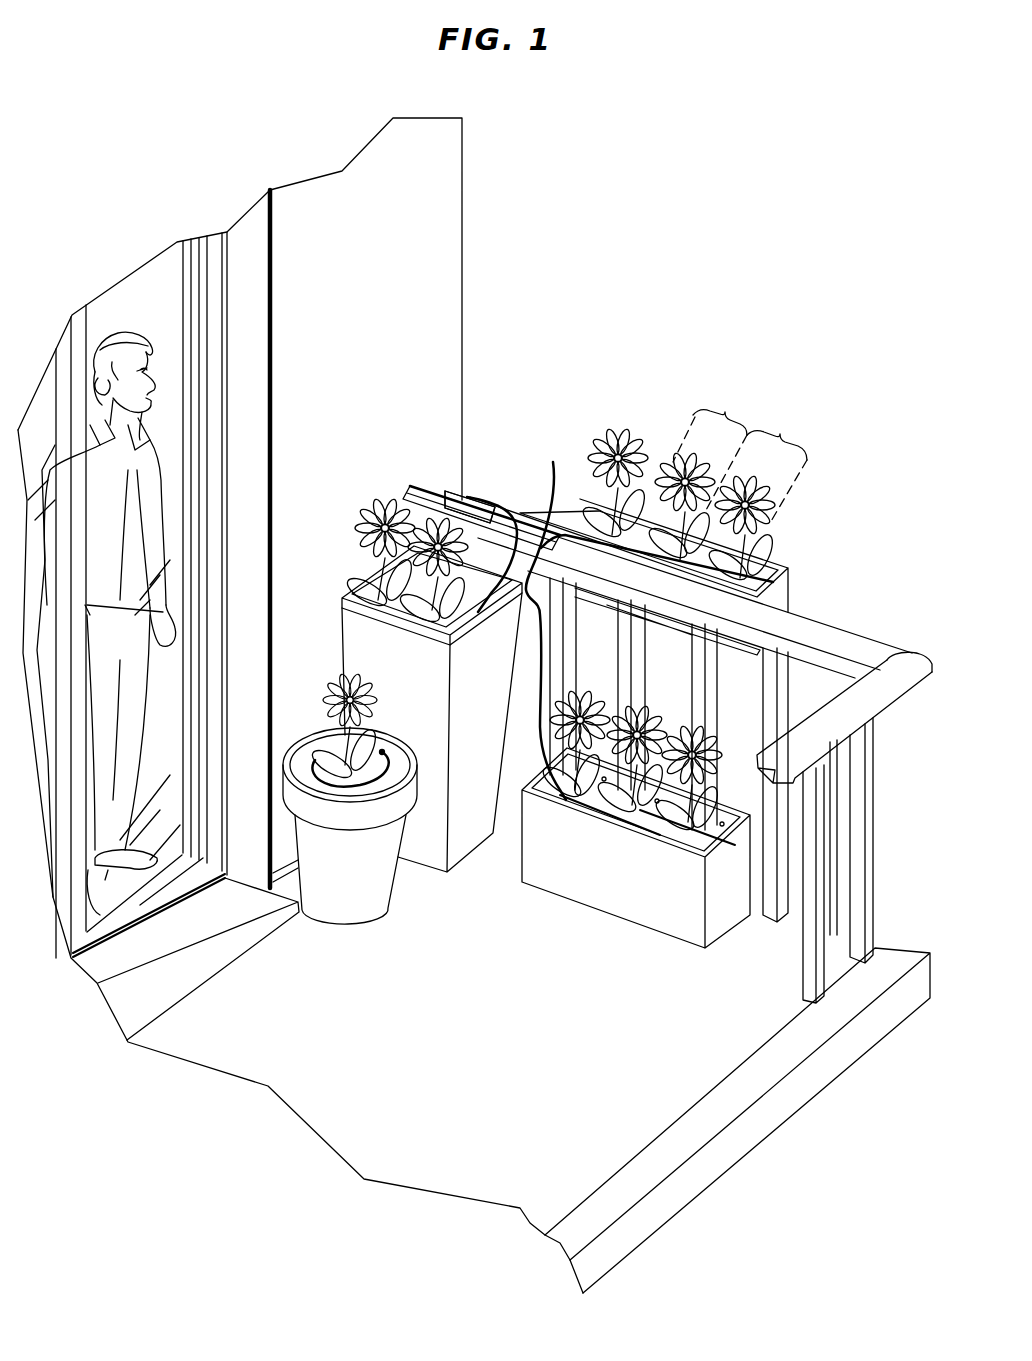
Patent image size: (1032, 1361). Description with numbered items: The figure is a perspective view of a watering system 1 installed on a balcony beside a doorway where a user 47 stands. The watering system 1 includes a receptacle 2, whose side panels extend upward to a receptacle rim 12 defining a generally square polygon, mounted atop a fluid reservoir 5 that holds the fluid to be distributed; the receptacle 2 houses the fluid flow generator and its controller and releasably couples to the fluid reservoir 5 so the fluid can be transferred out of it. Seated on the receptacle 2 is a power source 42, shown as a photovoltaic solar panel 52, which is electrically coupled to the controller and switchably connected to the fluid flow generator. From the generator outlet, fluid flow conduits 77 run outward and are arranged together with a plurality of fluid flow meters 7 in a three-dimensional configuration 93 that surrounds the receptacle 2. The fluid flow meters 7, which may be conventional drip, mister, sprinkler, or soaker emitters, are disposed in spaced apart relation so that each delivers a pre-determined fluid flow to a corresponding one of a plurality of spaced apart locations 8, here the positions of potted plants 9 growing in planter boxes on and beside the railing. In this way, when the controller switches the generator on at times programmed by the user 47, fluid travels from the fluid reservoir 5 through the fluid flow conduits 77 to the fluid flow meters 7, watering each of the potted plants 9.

The watering system 1 is at (598, 302).
The receptacle 2 is at (360, 569).
The fluid reservoir 5 is at (470, 748).
The fluid flow meters 7 is at (605, 780).
The spaced apart locations 8 is at (740, 454).
The potted plants 9 is at (789, 540).
The receptacle rim 12 is at (473, 618).
The power source 42 is at (470, 498).
The user 47 is at (105, 345).
The photovoltaic solar panel 52 is at (487, 452).
The fluid flow conduits 77 is at (462, 890).
The three-dimensional configuration 93 is at (445, 460).